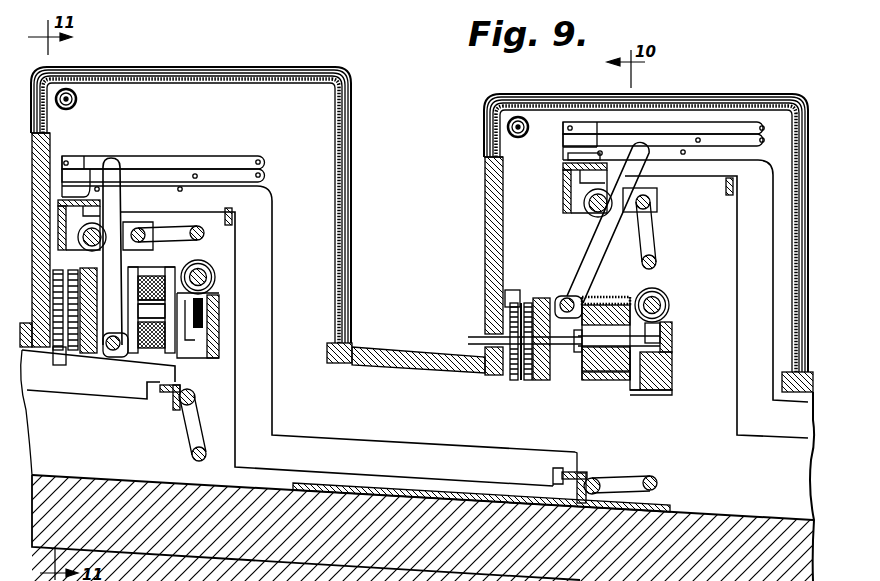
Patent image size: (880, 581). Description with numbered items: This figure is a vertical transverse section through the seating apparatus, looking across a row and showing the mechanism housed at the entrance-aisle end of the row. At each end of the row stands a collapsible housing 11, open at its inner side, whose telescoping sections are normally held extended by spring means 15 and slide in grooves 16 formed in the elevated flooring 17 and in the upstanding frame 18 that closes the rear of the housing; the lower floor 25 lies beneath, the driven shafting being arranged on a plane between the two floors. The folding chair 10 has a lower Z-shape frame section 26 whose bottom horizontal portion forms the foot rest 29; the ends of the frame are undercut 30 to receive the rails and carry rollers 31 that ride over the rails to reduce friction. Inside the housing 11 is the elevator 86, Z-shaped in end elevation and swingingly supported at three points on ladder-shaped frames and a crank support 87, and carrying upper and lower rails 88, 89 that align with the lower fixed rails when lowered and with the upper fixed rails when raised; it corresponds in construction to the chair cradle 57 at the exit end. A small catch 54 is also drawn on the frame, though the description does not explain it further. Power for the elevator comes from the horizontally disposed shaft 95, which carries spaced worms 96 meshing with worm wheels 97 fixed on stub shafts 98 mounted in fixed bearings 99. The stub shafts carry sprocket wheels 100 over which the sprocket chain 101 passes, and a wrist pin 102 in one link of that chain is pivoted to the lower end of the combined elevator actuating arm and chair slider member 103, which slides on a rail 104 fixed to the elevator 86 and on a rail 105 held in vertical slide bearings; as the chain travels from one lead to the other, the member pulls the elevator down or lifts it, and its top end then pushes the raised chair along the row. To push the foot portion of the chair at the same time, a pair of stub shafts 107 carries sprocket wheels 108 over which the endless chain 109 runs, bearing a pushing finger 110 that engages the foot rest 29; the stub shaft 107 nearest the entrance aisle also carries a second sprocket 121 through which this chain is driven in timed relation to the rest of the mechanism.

The folding chair 10 is at (233, 150).
The collapsible housing 11 is at (218, 62).
The spring means 15 is at (78, 86).
The grooves 16 is at (52, 136).
The elevated flooring 17 is at (396, 352).
The upstanding frame 18 is at (36, 220).
The floor 25 is at (735, 518).
The Z-shape frame section 26 is at (75, 396).
The foot rest 29 is at (414, 448).
The undercut 30 is at (552, 478).
The rollers 31 is at (180, 388).
The catch 54 is at (734, 190).
The elevator device or chair cradle 57 is at (234, 218).
The elevator 86 is at (660, 204).
The ladder shaped frames and crank support 87 is at (160, 236).
The upper rail 88 is at (58, 244).
The lower rail 89 is at (172, 402).
The horizontally disposed shaft 95 is at (216, 278).
The worms 96 is at (201, 262).
The worm wheels 97 is at (222, 343).
The stub shafts 98 is at (578, 340).
The fixed bearings 99 is at (675, 382).
The sprocket wheels 100 is at (606, 381).
The sprocket chain 101 is at (600, 304).
The wrist pin 102 is at (608, 296).
The combined elevator actuating arm and chair slider member 103 is at (113, 168).
The rail 104 is at (92, 251).
The rail 105 is at (114, 358).
The stub shafts 107 is at (490, 340).
The sprocket wheels 108 is at (527, 382).
The sprocket chain 109 is at (513, 382).
The pushing finger 110 is at (60, 364).
The second sprocket 121 is at (536, 382).